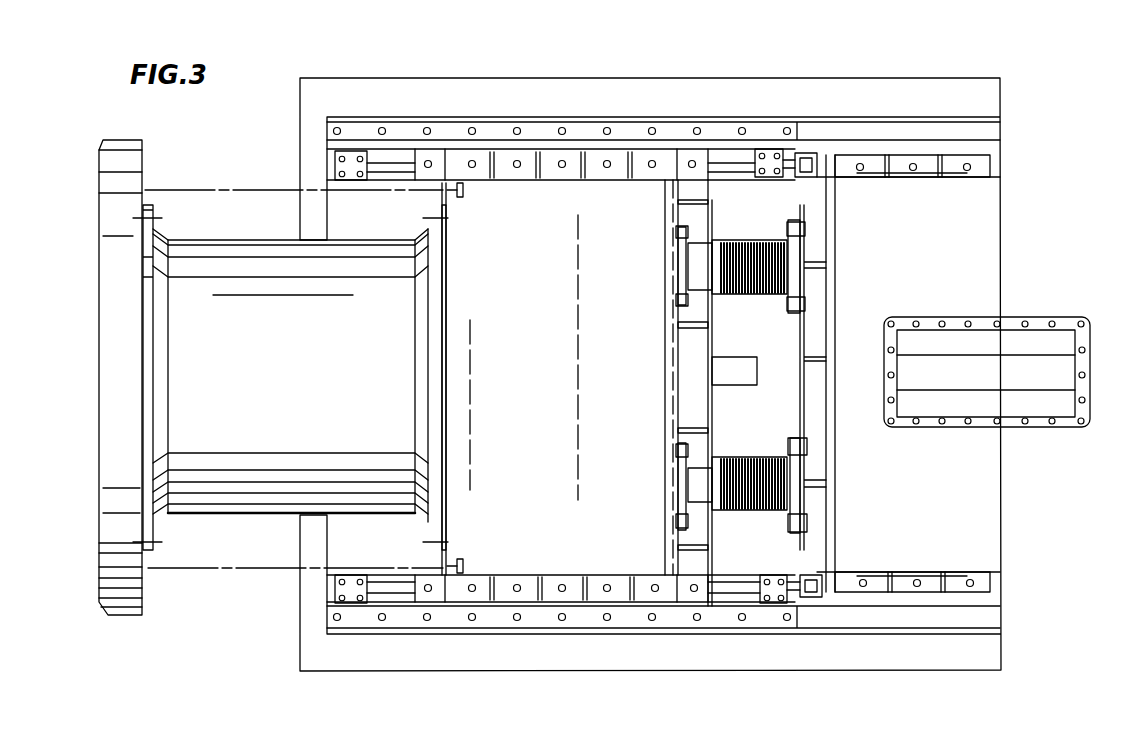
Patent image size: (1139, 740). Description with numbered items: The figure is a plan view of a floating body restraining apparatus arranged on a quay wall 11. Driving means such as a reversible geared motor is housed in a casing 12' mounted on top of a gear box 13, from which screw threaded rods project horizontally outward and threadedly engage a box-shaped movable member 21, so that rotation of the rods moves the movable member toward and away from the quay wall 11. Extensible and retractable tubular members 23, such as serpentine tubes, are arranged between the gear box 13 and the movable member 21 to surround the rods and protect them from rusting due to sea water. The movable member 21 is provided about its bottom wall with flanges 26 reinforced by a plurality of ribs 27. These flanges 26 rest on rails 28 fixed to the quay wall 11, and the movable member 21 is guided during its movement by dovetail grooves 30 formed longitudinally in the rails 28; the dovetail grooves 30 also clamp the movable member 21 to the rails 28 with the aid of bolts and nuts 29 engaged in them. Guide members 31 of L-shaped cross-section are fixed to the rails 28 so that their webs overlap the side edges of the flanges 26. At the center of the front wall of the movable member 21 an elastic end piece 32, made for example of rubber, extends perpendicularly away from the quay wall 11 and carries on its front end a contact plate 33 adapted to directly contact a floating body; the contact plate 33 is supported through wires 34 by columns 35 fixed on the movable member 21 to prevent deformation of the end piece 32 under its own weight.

The quay wall 11 is at (945, 62).
The casing 12' is at (987, 350).
The gear box 13 is at (984, 246).
The movable member 21 is at (553, 419).
The tubular members 23 is at (768, 238).
The flanges 26 is at (622, 158).
The ribs 27 is at (580, 158).
The rails 28 is at (742, 173).
The bolts and nuts 29 is at (696, 160).
The dovetail grooves 30 is at (397, 160).
The guide members 31 is at (456, 136).
The elastic end piece 32 is at (197, 363).
The contact plate 33 is at (146, 601).
The wires 34 is at (260, 190).
The columns 35 is at (462, 193).